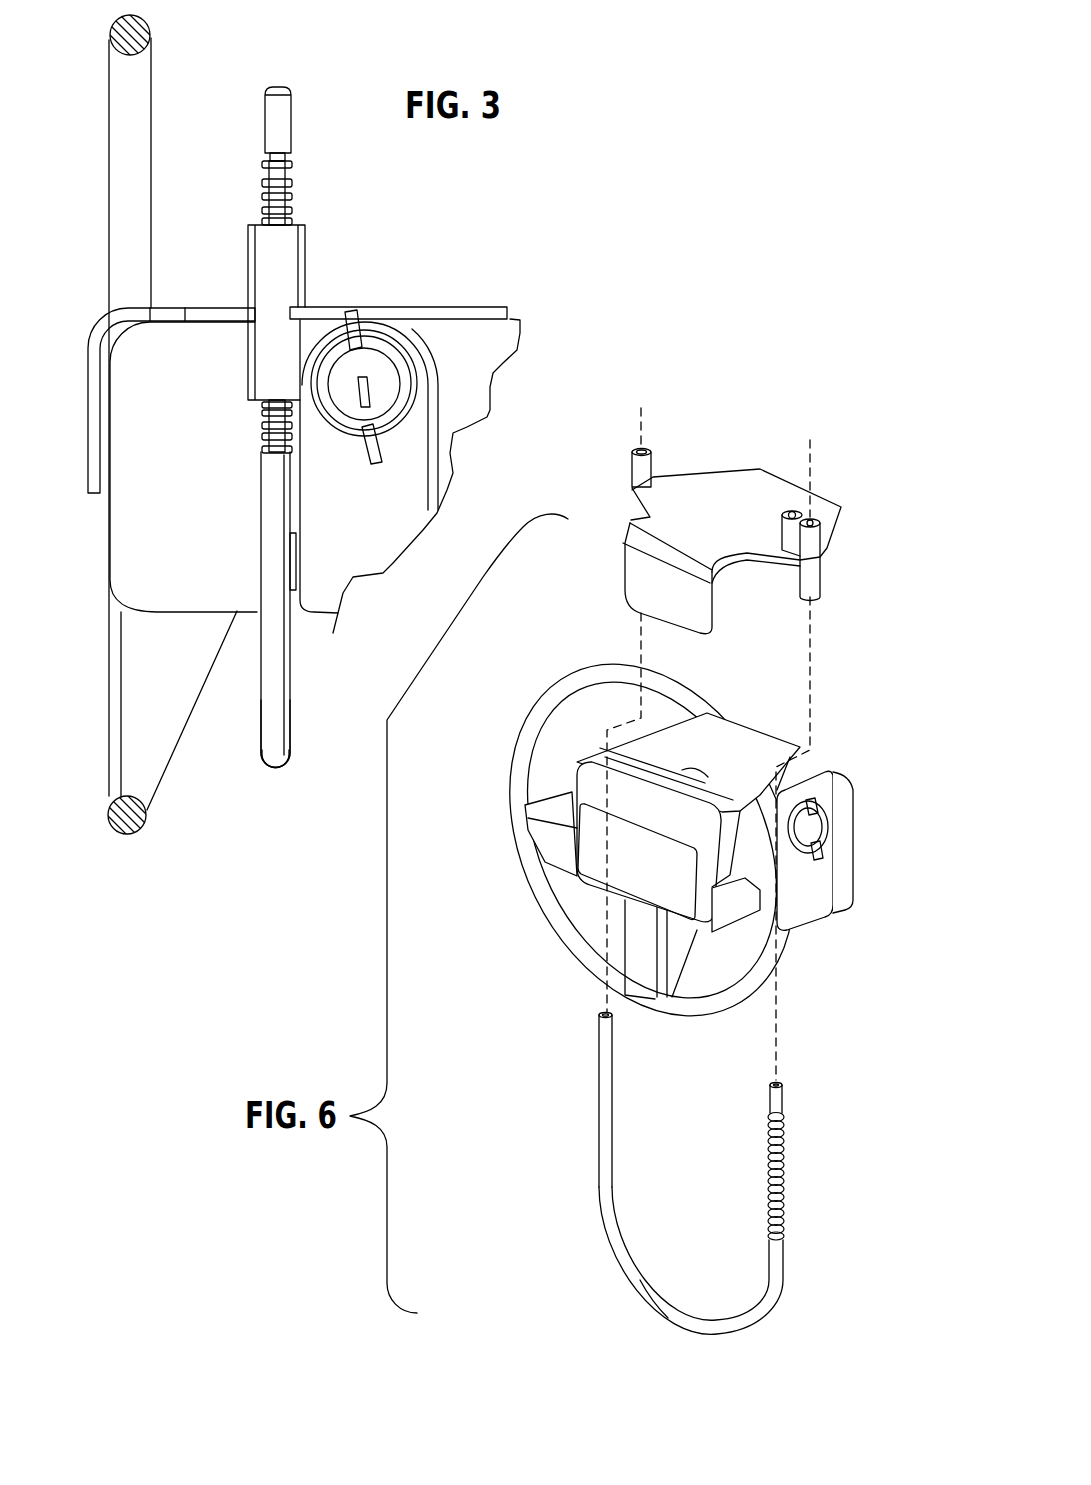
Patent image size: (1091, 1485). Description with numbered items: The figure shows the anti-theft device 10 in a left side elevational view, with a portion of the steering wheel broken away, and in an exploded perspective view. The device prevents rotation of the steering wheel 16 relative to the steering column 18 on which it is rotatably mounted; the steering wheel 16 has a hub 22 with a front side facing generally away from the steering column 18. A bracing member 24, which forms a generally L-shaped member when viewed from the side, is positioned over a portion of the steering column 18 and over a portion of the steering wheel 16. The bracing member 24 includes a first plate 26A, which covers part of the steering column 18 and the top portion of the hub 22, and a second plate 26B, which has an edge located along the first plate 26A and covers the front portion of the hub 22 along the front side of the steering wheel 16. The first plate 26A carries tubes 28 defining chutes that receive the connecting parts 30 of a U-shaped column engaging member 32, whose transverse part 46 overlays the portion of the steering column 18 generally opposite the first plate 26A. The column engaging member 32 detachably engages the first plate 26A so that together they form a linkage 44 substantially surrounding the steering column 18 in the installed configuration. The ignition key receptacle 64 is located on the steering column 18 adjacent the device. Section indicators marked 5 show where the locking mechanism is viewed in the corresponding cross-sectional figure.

In FIG. 3, the section line / flexible ribbed portion 5 is at (294, 184).
In FIG. 3, the anti-theft device 10 is at (327, 298).
In FIG. 6, the anti-theft device 10 is at (847, 497).
In FIG. 3, the steering wheel 16 is at (140, 830).
In FIG. 6, the steering wheel 16 is at (693, 1007).
In FIG. 3, the steering column 18 is at (488, 359).
In FIG. 6, the steering column 18 is at (843, 870).
In FIG. 3, the hub 22 is at (197, 479).
In FIG. 6, the hub 22 is at (647, 877).
In FIG. 3, the bracing member 24 is at (268, 330).
In FIG. 6, the bracing member 24 is at (750, 506).
In FIG. 3, the first plate 26A is at (440, 304).
In FIG. 6, the first plate 26A is at (735, 526).
In FIG. 3, the second plate 26B is at (88, 393).
In FIG. 6, the second plate 26B is at (667, 578).
In FIG. 3, the tube 28 is at (302, 250).
In FIG. 6, the tube 28 is at (650, 467).
In FIG. 3, the connecting part 30 is at (287, 122).
In FIG. 6, the connecting part 30 is at (607, 1078).
In FIG. 3, the column engaging member 32 is at (297, 740).
In FIG. 6, the column engaging member 32 is at (695, 1301).
In FIG. 3, the linkage 44 is at (248, 304).
In FIG. 3, the transverse part 46 is at (277, 762).
In FIG. 6, the transverse part 46 is at (637, 1285).
In FIG. 3, the ignition key receptacle 64 is at (379, 441).
In FIG. 6, the ignition key receptacle 64 is at (813, 798).